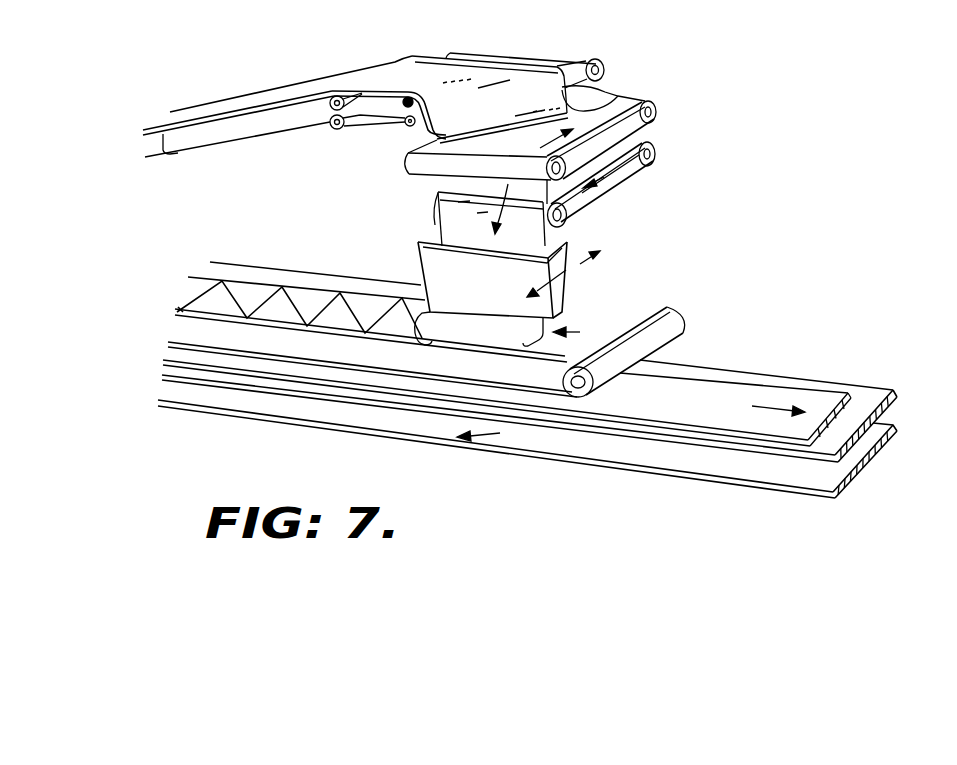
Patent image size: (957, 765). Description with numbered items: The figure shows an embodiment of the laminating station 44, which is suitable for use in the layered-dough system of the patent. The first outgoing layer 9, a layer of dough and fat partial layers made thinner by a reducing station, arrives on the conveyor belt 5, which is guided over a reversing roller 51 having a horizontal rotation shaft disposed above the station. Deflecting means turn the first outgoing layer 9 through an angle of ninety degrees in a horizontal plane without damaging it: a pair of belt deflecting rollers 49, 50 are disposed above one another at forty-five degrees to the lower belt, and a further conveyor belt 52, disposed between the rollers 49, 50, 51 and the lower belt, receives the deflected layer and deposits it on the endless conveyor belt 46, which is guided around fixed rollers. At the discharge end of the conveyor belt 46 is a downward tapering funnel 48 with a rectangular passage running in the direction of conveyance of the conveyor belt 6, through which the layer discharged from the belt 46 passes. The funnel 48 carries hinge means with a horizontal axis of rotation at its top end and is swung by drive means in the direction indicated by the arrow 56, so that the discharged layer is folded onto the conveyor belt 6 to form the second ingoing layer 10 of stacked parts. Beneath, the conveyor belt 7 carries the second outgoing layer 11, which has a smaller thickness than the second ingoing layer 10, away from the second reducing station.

The conveyor belt 5 is at (177, 153).
The conveyor belt 6 is at (664, 320).
The conveyor belt 7 is at (895, 426).
The first outgoing layer 9 is at (232, 105).
The second ingoing layer 10 is at (250, 293).
The second outgoing layer 11 is at (755, 389).
The laminating station 44 is at (735, 78).
The conveyor belt 46 is at (632, 181).
The funnel 48 is at (567, 287).
The belt deflecting roller 49 is at (404, 105).
The belt deflecting roller 50 is at (407, 124).
The reversing roller 51 is at (602, 63).
The conveyor belt 52 is at (634, 97).
The arrow 56 is at (588, 262).